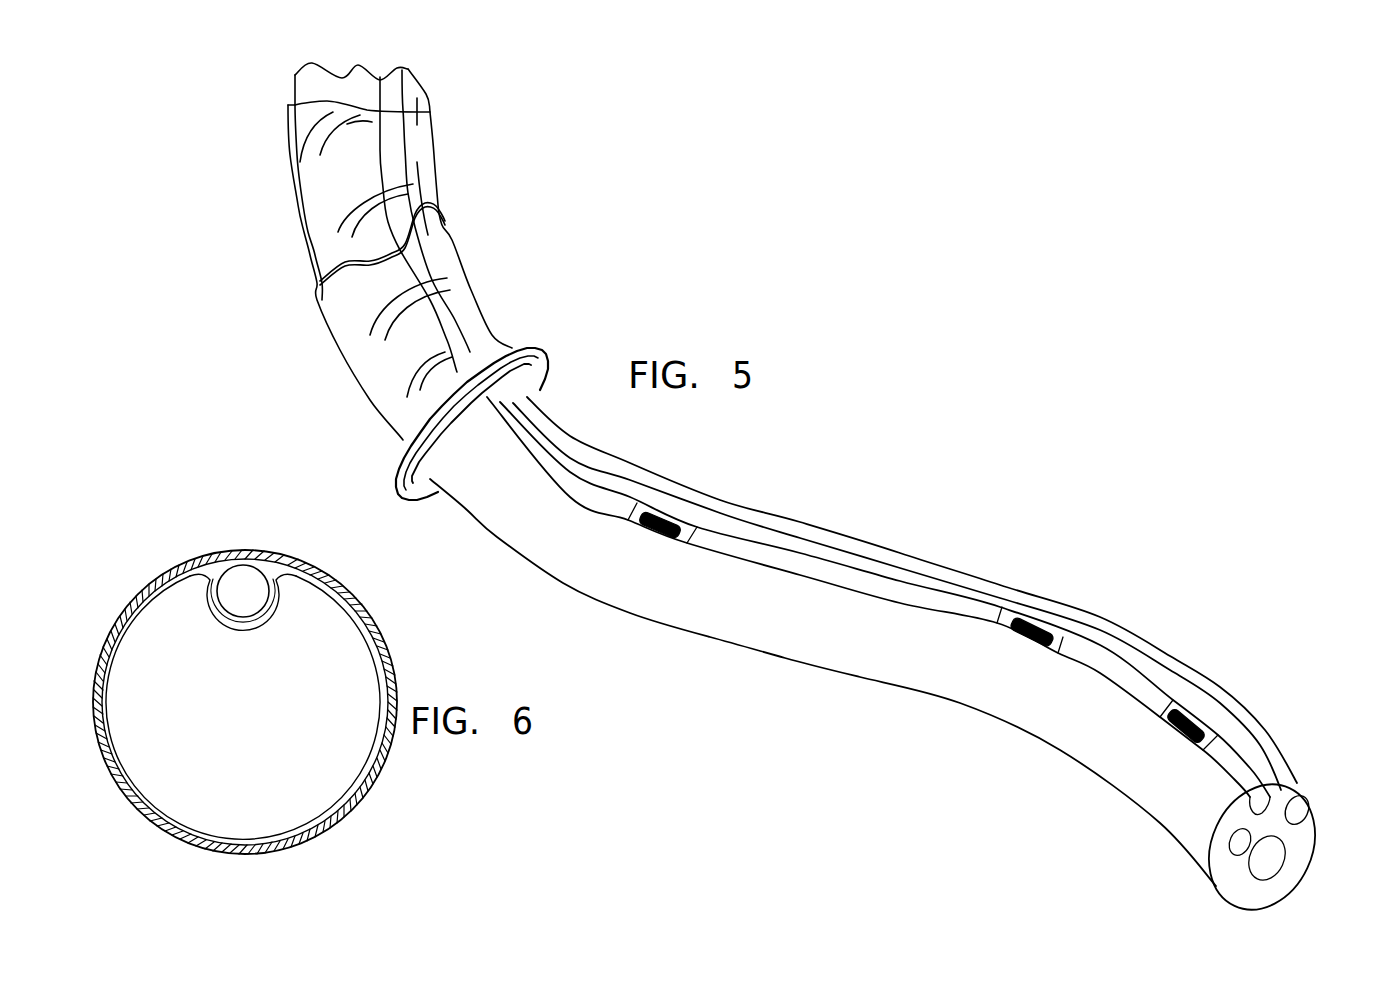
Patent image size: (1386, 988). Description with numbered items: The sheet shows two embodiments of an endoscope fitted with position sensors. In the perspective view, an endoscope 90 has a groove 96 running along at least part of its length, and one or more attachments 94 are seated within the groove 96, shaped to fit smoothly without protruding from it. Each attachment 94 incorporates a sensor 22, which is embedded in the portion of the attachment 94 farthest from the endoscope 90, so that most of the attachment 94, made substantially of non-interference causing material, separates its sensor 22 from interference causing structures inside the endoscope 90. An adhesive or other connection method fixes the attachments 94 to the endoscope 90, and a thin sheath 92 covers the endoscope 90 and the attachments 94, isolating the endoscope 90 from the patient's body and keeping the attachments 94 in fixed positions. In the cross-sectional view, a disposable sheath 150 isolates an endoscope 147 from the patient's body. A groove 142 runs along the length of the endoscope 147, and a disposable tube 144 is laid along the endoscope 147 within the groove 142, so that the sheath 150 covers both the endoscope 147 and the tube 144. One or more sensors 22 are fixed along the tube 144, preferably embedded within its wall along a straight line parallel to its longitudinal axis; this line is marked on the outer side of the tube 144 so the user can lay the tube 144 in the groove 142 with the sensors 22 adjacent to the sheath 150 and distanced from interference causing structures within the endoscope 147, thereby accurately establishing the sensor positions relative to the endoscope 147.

In FIG. 5, the sensor 22 is at (647, 503).
In FIG. 6, the sensor 22 is at (244, 560).
In FIG. 5, the endoscope 90 is at (807, 548).
In FIG. 5, the thin sheath 92 is at (500, 337).
In FIG. 5, the attachment 94 is at (695, 528).
In FIG. 5, the groove 96 is at (873, 583).
In FIG. 6, the groove 142 is at (212, 565).
In FIG. 6, the disposable tube 144 is at (291, 570).
In FIG. 6, the endoscope 147 is at (229, 784).
In FIG. 6, the disposable sheath 150 is at (110, 762).